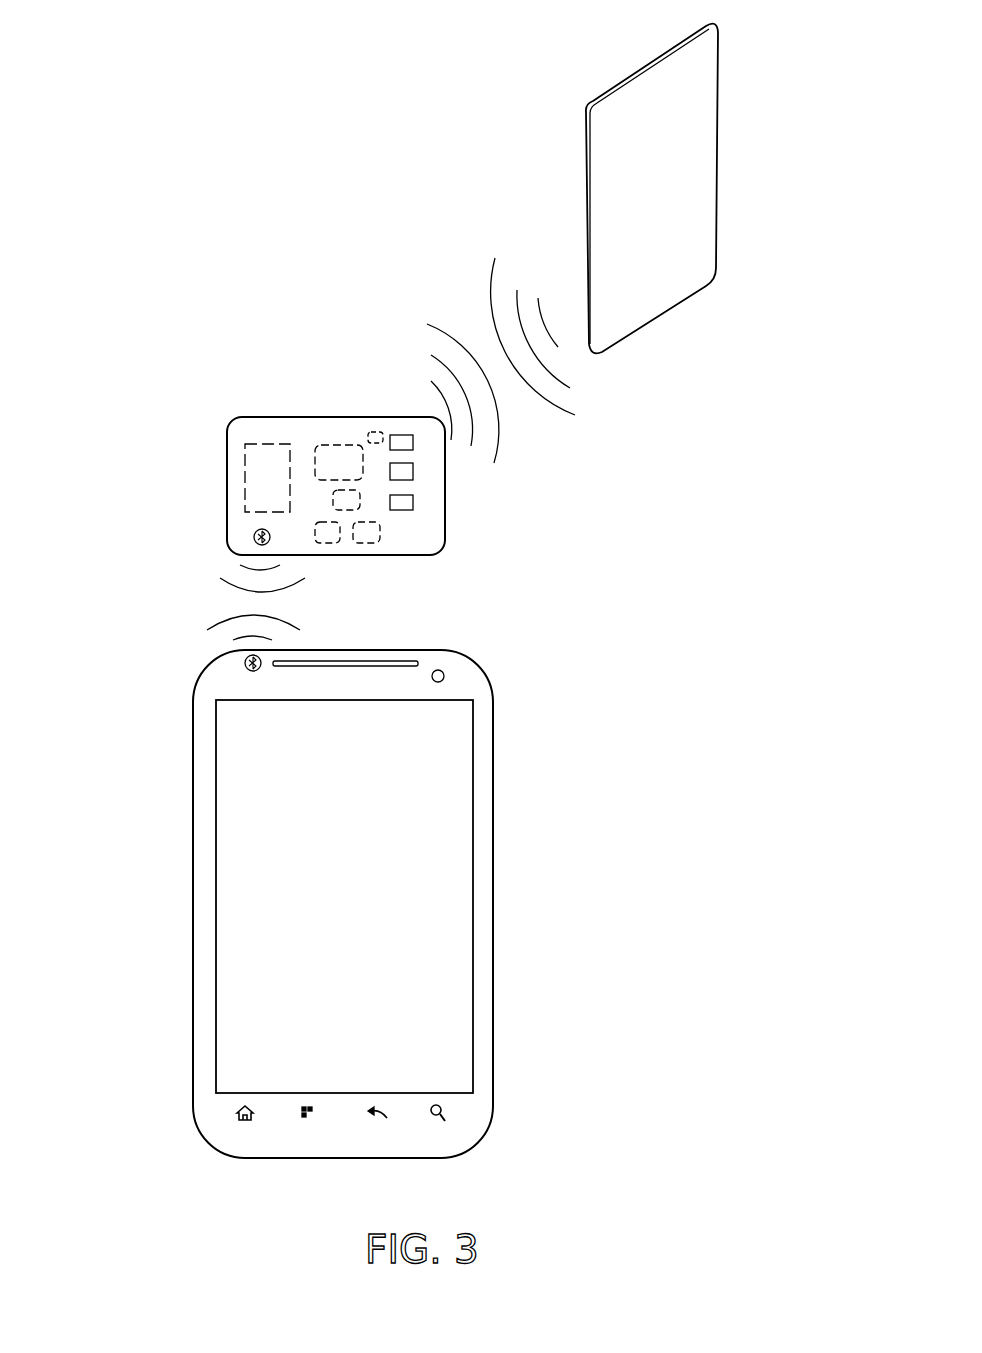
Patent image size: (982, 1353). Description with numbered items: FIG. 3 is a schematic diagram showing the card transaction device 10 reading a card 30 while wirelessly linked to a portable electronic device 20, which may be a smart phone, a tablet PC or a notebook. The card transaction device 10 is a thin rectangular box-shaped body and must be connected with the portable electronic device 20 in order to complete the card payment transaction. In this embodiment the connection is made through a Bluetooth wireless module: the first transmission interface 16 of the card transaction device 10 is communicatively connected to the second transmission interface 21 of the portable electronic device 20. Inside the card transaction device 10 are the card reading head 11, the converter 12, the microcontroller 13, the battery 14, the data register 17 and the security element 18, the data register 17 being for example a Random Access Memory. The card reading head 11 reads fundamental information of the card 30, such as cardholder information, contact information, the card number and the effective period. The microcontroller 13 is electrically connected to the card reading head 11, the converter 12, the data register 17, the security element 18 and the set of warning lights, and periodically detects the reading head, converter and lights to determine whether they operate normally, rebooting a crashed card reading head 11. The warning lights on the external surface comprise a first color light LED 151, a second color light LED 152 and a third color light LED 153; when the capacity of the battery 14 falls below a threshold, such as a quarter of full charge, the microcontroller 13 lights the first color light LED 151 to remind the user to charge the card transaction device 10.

The card transaction device 10 is at (216, 462).
The card reading head 11 is at (340, 445).
The converter 12 is at (330, 543).
The microcontroller 13 is at (334, 496).
The battery 14 is at (268, 444).
The first transmission interface 16 is at (254, 536).
The data register 17 is at (378, 432).
The security element 18 is at (381, 529).
The first color light LED 151 is at (402, 440).
The second color light LED 152 is at (402, 470).
The third color light LED 153 is at (402, 500).
The portable electronic device 20 is at (158, 870).
The second transmission interface 21 is at (245, 665).
The card 30 is at (718, 137).